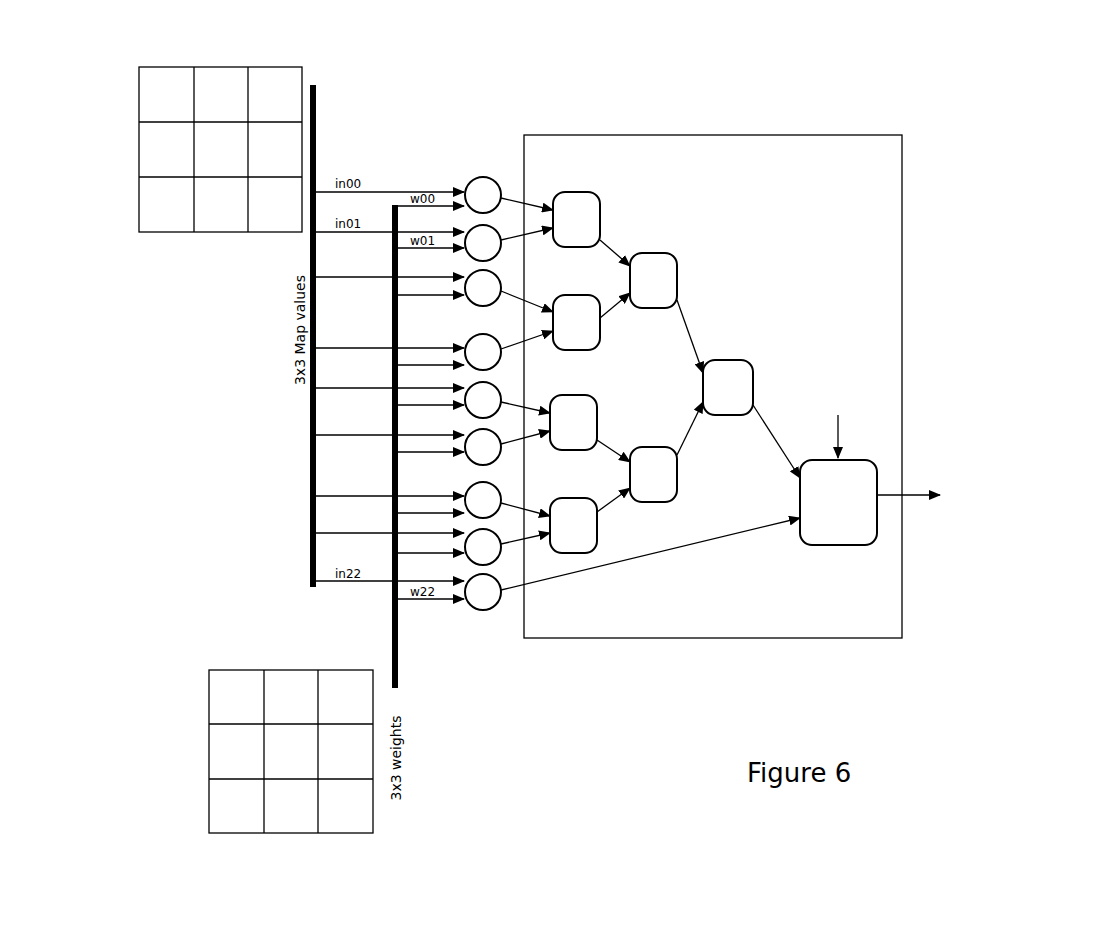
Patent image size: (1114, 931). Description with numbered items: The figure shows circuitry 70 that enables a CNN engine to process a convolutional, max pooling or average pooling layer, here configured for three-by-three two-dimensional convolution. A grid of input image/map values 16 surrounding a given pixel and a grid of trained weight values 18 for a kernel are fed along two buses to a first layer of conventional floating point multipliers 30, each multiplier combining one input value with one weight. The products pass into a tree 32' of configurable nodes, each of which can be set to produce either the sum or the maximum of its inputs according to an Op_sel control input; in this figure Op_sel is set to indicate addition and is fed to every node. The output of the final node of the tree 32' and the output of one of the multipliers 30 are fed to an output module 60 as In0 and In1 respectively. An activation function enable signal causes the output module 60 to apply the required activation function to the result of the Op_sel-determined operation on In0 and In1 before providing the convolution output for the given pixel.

The input image/map values 16 is at (220, 163).
The trained weight values 18 is at (291, 764).
The floating point multipliers 30 is at (492, 622).
The tree of configurable nodes 32' is at (652, 372).
The output module 60 is at (689, 476).
The circuitry 70 is at (990, 334).